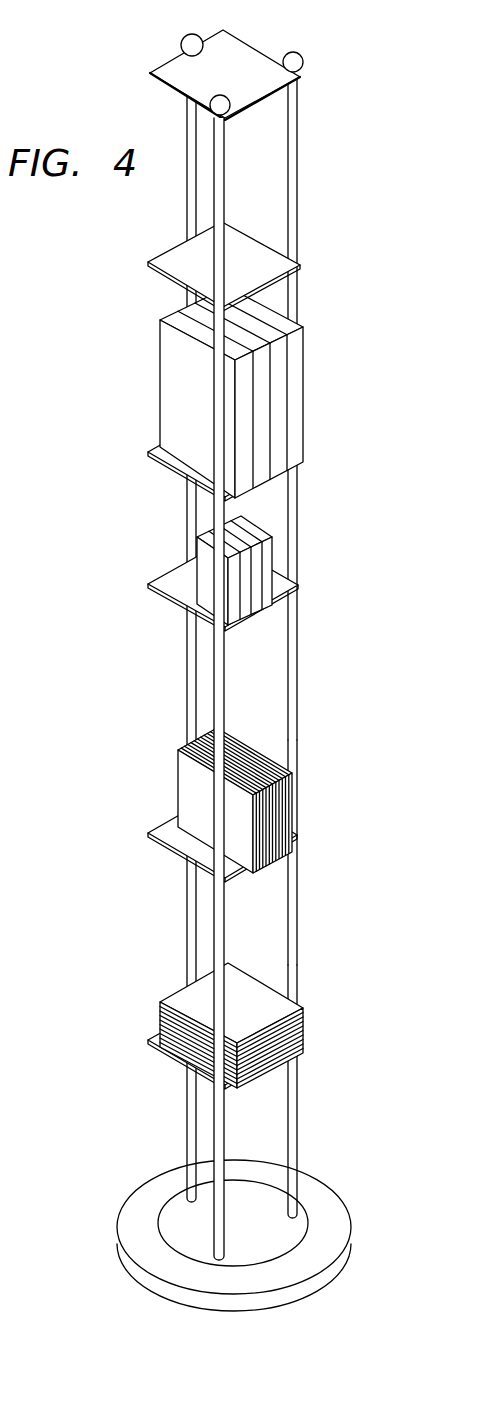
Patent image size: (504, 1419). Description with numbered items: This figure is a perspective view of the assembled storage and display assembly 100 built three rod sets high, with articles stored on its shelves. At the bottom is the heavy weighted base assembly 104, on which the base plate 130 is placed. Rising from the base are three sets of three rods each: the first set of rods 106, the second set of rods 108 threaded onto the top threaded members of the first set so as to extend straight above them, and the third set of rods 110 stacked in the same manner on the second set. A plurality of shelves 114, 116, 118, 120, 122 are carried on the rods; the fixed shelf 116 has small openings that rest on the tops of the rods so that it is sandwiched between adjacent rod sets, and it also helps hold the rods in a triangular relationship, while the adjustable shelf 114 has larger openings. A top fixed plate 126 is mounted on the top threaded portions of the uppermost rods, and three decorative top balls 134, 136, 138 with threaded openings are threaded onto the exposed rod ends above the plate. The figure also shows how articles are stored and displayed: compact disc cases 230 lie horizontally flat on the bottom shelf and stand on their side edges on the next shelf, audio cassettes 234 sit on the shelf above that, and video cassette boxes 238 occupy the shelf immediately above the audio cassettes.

The storage and display assembly 100 is at (127, 389).
The base assembly 104 is at (158, 1263).
The base plate 130 is at (170, 1220).
The first set of rods 106 is at (308, 980).
The second set of rods 108 is at (306, 748).
The third set of rods 110 is at (306, 177).
The adjustable shelf 114 is at (157, 1043).
The fixed shelf 116 is at (158, 843).
The shelf 118 is at (167, 600).
The shelf 120 is at (158, 465).
The shelf 122 is at (173, 268).
The top fixed plate 126 is at (171, 67).
The decorative top ball 134 is at (183, 37).
The decorative top ball 136 is at (211, 105).
The decorative top ball 138 is at (302, 56).
The compact disc cases 230 is at (303, 1038).
The audio cassettes 234 is at (258, 595).
The video cassette boxes 238 is at (292, 445).